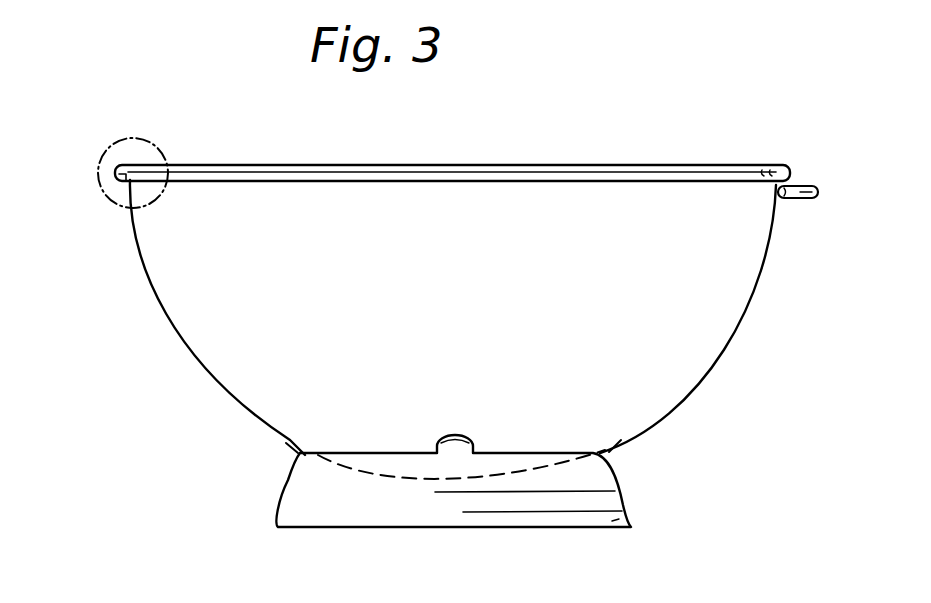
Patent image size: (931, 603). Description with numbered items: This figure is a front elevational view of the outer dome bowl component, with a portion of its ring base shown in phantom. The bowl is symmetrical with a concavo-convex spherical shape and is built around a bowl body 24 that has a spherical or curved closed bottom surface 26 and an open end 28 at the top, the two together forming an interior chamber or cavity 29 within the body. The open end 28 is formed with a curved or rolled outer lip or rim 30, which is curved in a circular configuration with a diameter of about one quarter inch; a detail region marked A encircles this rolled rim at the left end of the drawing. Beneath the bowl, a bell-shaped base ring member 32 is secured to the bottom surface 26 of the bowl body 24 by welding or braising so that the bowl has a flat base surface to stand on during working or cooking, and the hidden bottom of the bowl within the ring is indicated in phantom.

The bowl body 24 is at (750, 298).
The bottom surface 26 is at (537, 470).
The open end 28 is at (597, 166).
The interior chamber 29 is at (479, 343).
The outer lip 30 is at (107, 163).
The base ring member 32 is at (620, 482).
The detail A is at (158, 146).